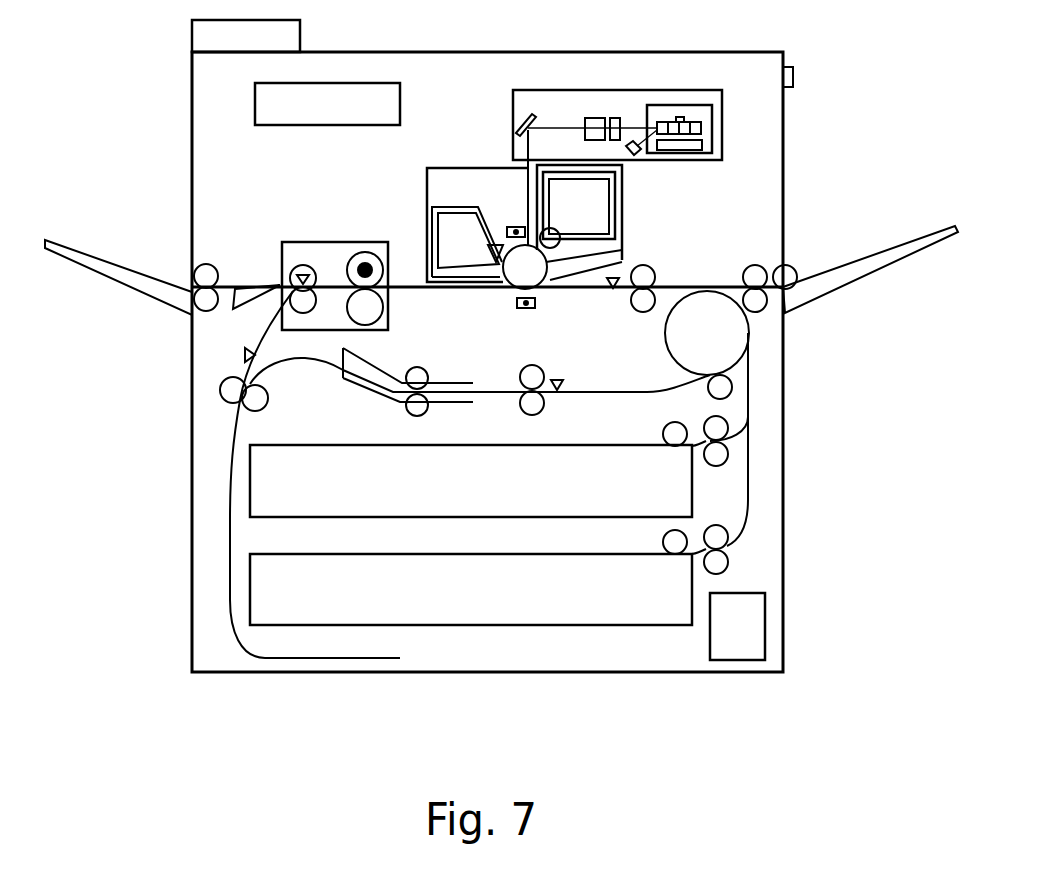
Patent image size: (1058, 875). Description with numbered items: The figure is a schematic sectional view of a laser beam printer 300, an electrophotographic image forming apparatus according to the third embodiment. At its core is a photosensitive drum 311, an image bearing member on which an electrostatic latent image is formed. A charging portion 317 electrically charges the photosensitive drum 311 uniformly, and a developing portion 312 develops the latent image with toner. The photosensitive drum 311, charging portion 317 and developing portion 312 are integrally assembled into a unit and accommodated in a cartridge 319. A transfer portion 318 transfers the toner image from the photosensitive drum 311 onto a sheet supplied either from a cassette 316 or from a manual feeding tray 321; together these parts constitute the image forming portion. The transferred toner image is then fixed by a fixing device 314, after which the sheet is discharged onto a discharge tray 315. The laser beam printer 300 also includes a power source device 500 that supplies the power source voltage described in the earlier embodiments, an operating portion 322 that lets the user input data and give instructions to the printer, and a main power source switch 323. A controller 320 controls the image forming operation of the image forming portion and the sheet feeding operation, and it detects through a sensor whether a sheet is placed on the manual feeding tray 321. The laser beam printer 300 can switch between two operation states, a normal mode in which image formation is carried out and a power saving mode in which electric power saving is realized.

The laser beam printer 300 is at (672, 52).
The photosensitive drum 311 is at (538, 267).
The developing portion 312 is at (553, 236).
The fixing device 314 is at (335, 241).
The discharge tray 315 is at (105, 265).
The cassette 316 is at (673, 605).
The charging portion 317 is at (516, 226).
The transfer portion 318 is at (536, 304).
The cartridge 319 is at (440, 167).
The controller 320 is at (303, 126).
The manual feeding tray 321 is at (838, 266).
The operating portion 322 is at (303, 43).
The main switch 323 is at (793, 77).
The power source device 500 is at (710, 628).